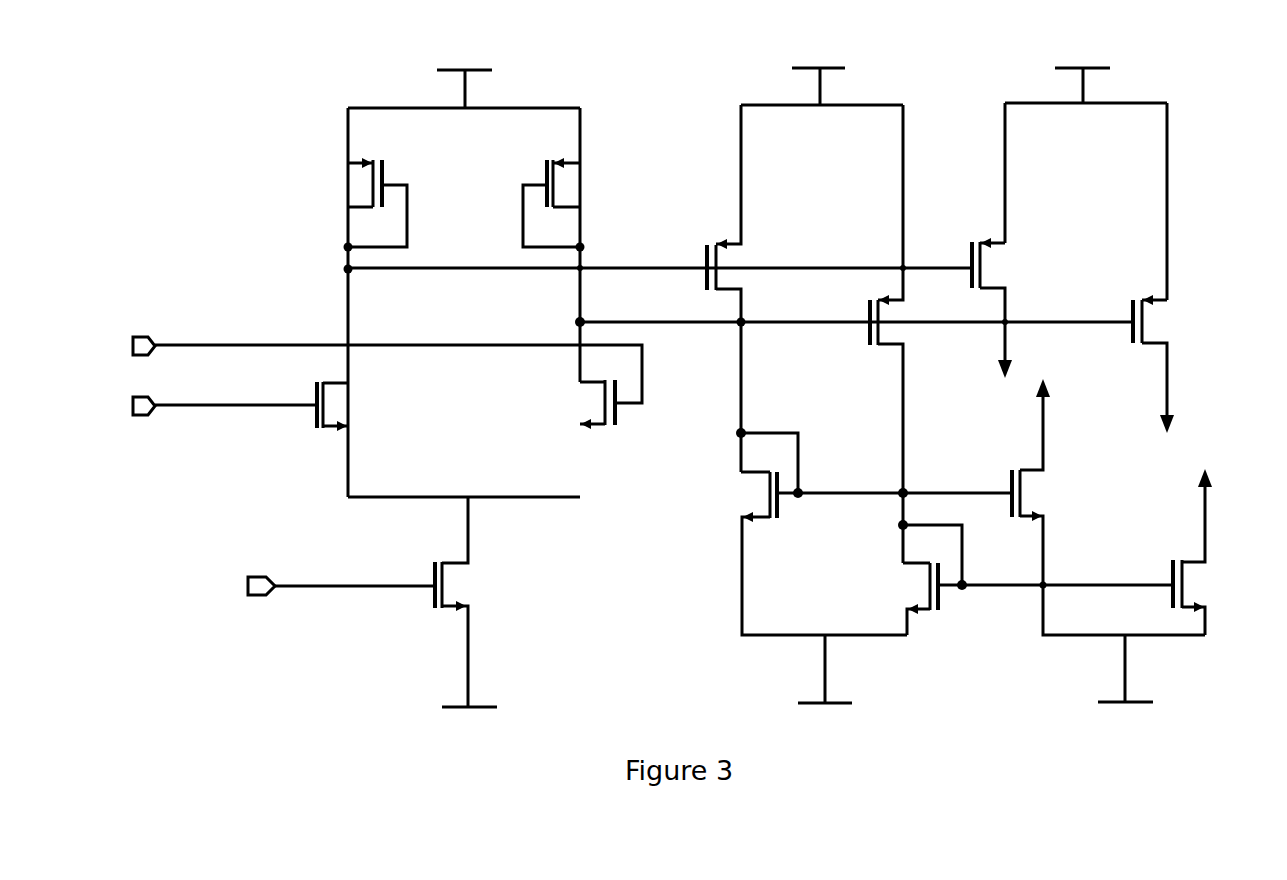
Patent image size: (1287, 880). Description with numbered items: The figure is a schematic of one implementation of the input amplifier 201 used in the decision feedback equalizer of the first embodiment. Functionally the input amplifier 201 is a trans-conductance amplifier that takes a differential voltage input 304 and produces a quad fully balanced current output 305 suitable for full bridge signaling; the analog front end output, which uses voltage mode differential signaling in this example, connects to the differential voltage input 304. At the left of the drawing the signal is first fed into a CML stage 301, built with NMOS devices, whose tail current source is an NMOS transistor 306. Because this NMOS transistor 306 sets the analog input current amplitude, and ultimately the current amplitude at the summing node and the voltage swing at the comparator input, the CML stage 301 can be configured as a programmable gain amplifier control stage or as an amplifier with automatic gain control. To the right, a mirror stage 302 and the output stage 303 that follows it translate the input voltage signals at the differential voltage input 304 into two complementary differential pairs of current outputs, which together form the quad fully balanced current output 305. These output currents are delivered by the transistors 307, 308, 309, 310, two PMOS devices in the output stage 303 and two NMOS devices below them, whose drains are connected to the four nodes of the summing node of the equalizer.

The input amplifier 201 is at (276, 61).
The CML stage 301 is at (372, 108).
The mirror stage 302 is at (745, 105).
The output stage 303 is at (1003, 103).
The differential voltage input 304 is at (203, 349).
The quad fully balanced current output 305 is at (1203, 494).
The NMOS transistor 306 is at (462, 561).
The transistor 307 is at (1000, 281).
The transistor 308 is at (1150, 333).
The transistor 309 is at (1043, 474).
The transistor 310 is at (1195, 568).